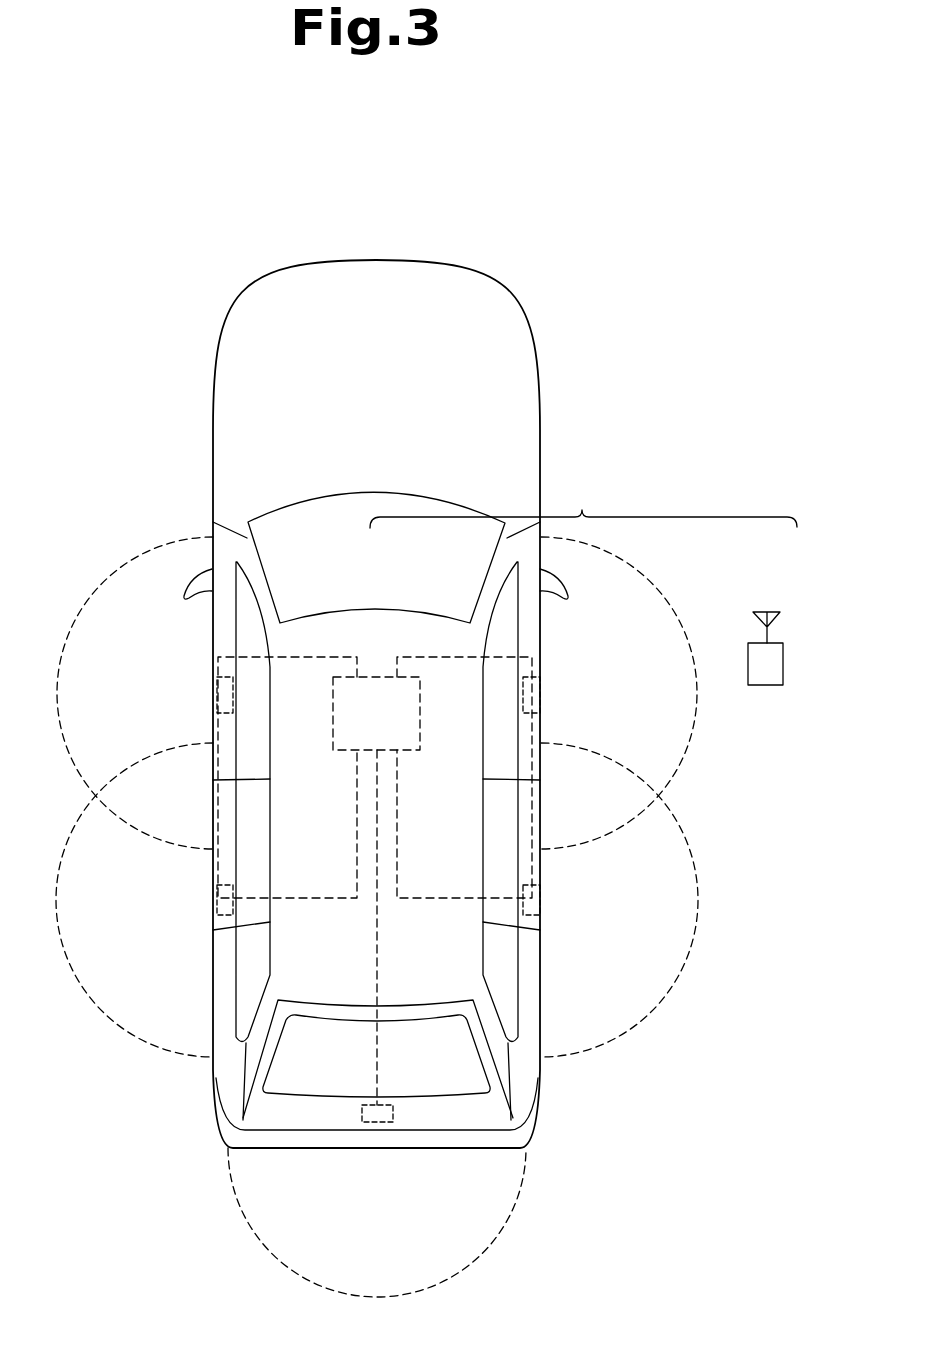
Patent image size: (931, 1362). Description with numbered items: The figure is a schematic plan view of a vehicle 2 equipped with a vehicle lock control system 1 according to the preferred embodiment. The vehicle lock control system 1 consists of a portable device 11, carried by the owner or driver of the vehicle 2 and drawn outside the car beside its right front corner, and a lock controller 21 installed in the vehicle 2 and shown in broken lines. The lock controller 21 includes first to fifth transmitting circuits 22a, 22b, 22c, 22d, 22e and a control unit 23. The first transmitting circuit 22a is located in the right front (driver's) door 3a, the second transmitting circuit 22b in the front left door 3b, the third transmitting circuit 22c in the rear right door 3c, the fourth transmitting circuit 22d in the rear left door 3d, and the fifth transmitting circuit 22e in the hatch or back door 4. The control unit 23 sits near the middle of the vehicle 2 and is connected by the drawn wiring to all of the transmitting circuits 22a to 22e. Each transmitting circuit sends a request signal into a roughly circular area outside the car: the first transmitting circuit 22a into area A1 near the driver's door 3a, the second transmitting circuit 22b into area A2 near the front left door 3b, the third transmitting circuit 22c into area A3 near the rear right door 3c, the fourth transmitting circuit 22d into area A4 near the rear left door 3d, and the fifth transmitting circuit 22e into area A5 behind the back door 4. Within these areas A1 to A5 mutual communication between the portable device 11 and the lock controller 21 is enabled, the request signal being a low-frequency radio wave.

The vehicle lock control system 1 is at (590, 500).
The vehicle 2 is at (490, 275).
The right front (driver's) door 3a is at (538, 622).
The front left door 3b is at (220, 619).
The rear right door 3c is at (538, 805).
The rear left door 3d is at (220, 803).
The hatch (back door) 4 is at (283, 1123).
The portable device 11 is at (753, 640).
The lock controller 21 is at (417, 633).
The first transmitting circuit 22a is at (542, 723).
The second transmitting circuit 22b is at (212, 718).
The third transmitting circuit 22c is at (540, 906).
The fourth transmitting circuit 22d is at (213, 906).
The fifth transmitting circuit 22e is at (367, 1125).
The control unit 23 is at (333, 712).
The area A1 is at (668, 688).
The area A2 is at (123, 684).
The area A3 is at (672, 914).
The area A4 is at (121, 912).
The area A5 is at (390, 1255).